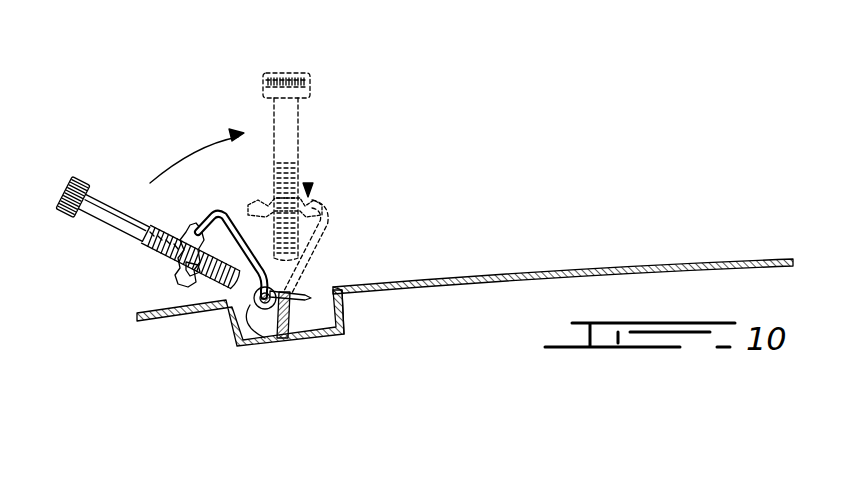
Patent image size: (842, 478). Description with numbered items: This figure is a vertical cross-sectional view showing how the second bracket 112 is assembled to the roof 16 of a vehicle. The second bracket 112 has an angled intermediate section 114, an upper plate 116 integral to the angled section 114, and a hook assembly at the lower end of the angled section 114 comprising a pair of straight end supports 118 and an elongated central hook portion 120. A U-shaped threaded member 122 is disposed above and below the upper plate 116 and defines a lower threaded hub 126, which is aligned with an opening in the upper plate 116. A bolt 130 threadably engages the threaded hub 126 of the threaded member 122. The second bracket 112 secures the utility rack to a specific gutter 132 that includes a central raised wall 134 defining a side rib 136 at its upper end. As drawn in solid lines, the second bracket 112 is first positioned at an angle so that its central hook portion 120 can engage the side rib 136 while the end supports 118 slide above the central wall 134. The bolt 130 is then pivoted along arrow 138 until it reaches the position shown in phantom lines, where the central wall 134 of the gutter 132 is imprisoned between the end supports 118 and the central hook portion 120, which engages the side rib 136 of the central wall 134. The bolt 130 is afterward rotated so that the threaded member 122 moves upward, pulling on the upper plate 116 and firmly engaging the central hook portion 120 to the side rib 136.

The roof 16 is at (640, 258).
The second bracket 112 is at (140, 263).
The angled intermediate section 114 is at (228, 212).
The upper plate 116 is at (178, 278).
The straight end supports 118 is at (340, 310).
The elongated central hook portion 120 is at (246, 345).
The U-shaped threaded member 122 is at (203, 231).
The lower threaded hub 126 is at (198, 265).
The bolt 130 is at (110, 216).
The gutter 132 is at (330, 272).
The central raised wall 134 is at (273, 345).
The side rib 136 is at (278, 295).
The arrow 138 is at (197, 148).